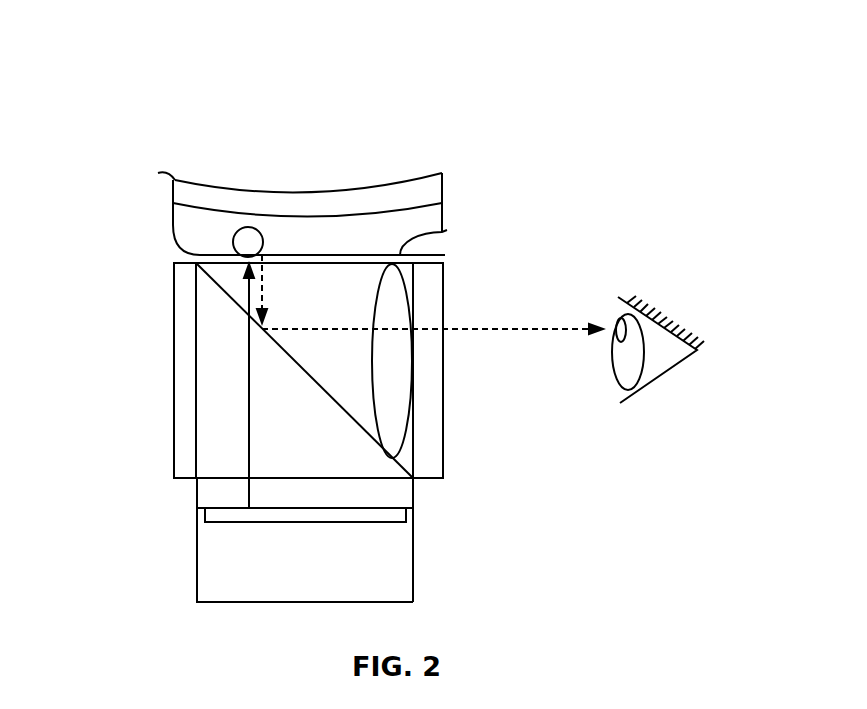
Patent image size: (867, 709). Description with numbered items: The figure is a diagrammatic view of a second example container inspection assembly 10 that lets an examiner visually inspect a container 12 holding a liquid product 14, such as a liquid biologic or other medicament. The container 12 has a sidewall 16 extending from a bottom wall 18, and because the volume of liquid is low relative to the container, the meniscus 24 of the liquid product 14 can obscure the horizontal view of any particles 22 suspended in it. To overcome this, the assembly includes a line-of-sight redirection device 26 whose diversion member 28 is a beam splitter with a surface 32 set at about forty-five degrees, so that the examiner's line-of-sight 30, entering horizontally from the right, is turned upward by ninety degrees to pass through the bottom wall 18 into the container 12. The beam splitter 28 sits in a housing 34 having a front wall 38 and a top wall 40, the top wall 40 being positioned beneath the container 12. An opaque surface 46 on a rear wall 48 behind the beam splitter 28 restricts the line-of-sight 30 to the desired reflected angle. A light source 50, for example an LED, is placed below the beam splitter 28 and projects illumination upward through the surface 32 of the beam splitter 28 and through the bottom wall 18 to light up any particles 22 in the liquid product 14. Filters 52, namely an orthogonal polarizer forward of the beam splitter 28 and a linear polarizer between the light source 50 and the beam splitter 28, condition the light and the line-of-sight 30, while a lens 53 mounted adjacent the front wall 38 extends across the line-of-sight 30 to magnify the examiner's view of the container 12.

The container inspection assembly 10 is at (542, 83).
The container 12 is at (445, 192).
The liquid product 14 is at (293, 242).
The sidewall 16 is at (173, 222).
The bottom wall 18 is at (433, 228).
The particles 22 is at (249, 238).
The meniscus 24 is at (210, 210).
The line-of-sight redirection device 26 is at (110, 435).
The diversion member 28 is at (208, 318).
The line-of-sight 30 is at (527, 328).
The surface 32 is at (357, 420).
The housing 34 is at (180, 360).
The front wall 38 is at (433, 280).
The top wall 40 is at (197, 262).
The opaque surface 46 is at (207, 415).
The rear wall 48 is at (186, 480).
The light source 50 is at (415, 554).
The filters 52 is at (423, 458).
The lens 53 is at (395, 367).